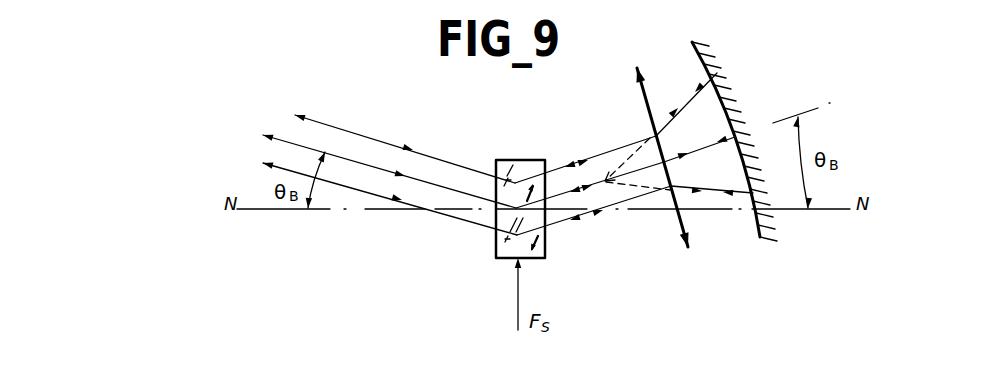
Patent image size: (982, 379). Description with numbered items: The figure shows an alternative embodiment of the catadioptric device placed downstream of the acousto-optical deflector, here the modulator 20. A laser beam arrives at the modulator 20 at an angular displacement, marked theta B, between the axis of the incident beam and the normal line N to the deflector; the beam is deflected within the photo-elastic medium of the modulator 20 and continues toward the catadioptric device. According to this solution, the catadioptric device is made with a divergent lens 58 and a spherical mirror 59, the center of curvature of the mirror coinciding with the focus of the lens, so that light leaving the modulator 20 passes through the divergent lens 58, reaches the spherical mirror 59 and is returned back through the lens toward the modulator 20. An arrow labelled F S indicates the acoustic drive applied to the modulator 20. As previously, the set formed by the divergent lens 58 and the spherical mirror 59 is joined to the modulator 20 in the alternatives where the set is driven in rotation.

The modulator 20 is at (515, 160).
The divergent lens 58 is at (643, 108).
The spherical mirror 59 is at (720, 77).